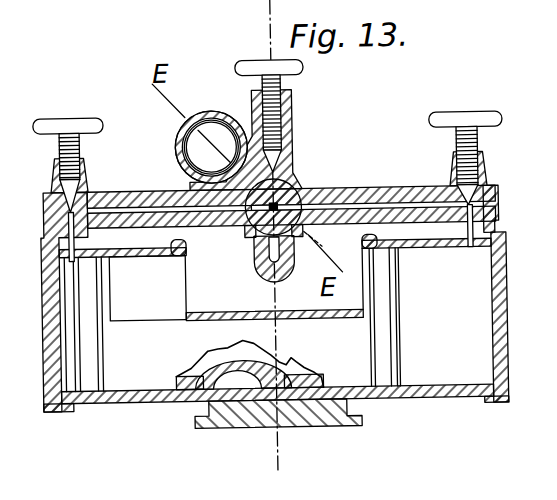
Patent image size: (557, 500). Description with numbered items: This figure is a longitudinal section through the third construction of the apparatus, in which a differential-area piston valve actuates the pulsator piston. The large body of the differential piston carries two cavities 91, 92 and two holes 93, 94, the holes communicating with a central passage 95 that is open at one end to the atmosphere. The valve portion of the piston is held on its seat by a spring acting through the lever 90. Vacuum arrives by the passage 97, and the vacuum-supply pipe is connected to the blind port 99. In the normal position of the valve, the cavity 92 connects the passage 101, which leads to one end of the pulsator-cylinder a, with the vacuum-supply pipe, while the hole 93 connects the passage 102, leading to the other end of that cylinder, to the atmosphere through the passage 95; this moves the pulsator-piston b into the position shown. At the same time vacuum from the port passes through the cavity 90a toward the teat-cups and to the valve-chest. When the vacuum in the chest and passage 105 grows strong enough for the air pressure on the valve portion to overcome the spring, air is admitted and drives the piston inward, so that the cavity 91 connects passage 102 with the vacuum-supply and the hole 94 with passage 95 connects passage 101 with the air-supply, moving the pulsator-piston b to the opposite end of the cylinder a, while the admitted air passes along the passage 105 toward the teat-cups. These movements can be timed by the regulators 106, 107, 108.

The lever 90 is at (298, 280).
The cavity 90a is at (206, 392).
The cavity 91 is at (331, 247).
The cavity 92 is at (257, 233).
The hole 93 is at (302, 195).
The hole 94 is at (286, 182).
The passage 95 is at (262, 246).
The passage 97 is at (236, 427).
The blind port 99 is at (337, 427).
The passage 101 is at (120, 208).
The passage 102 is at (396, 206).
The passage 105 is at (270, 155).
The regulator 106 is at (297, 70).
The regulator 107 is at (81, 125).
The regulator 108 is at (466, 165).
The pulsator-cylinder a is at (504, 310).
The pulsator-piston b is at (276, 312).